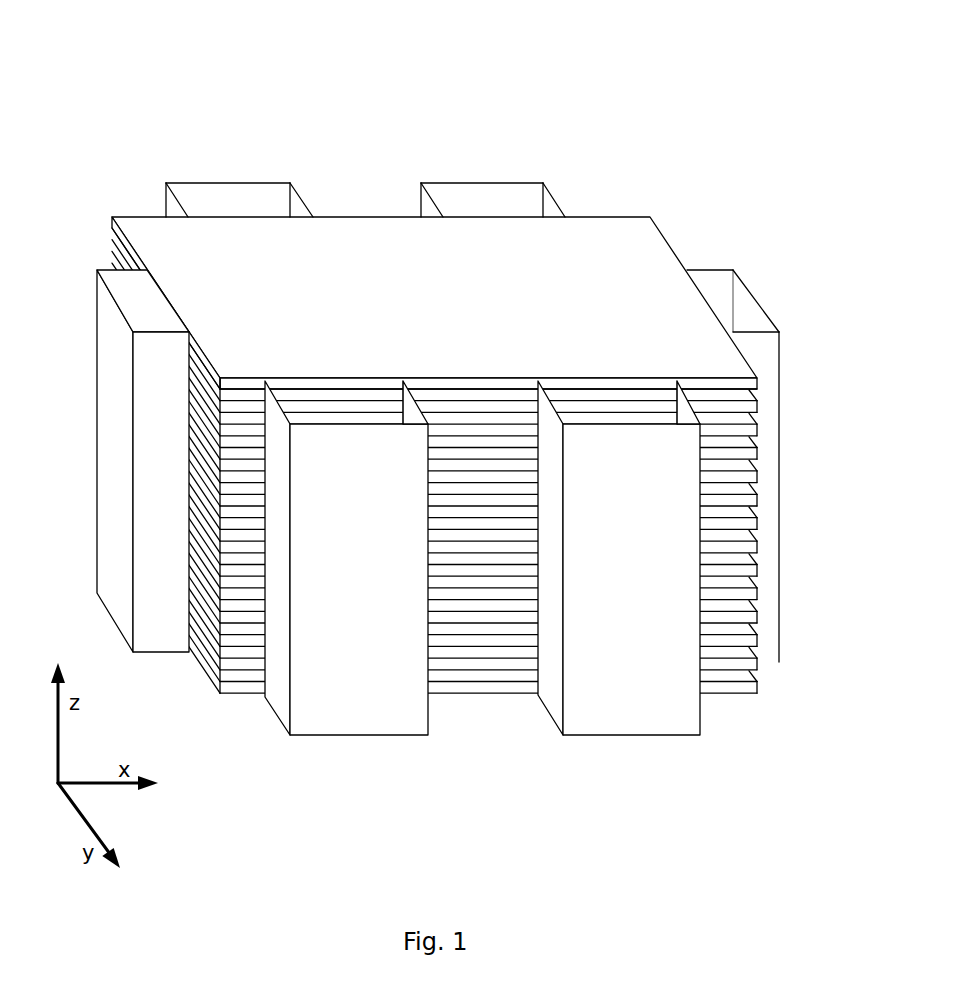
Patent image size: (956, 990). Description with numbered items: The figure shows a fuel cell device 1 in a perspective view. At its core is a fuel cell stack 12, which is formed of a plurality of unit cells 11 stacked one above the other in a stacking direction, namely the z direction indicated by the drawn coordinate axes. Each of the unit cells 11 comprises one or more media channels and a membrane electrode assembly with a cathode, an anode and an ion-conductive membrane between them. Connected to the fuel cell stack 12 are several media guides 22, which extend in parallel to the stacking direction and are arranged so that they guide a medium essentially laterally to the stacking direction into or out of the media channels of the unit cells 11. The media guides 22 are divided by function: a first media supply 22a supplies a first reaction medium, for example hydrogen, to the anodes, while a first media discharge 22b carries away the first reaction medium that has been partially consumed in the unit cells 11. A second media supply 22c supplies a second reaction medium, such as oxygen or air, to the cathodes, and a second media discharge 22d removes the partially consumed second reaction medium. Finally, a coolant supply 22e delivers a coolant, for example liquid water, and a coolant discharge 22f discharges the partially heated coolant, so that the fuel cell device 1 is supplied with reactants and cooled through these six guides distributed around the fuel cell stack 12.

The fuel cell device 1 is at (598, 70).
The unit cells 11 is at (738, 466).
The fuel cell stack 12 is at (600, 242).
The media guides 22 is at (469, 391).
The first media supply 22a is at (135, 322).
The first media discharge 22b is at (742, 318).
The second media supply 22c is at (446, 200).
The second media discharge 22d is at (338, 462).
The coolant supply 22e is at (216, 200).
The coolant discharge 22f is at (625, 455).